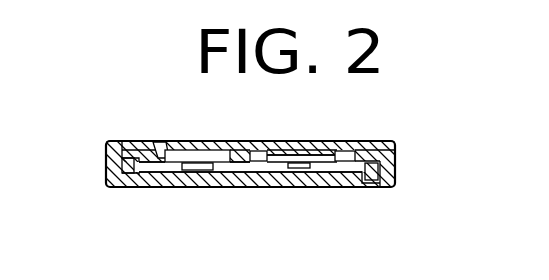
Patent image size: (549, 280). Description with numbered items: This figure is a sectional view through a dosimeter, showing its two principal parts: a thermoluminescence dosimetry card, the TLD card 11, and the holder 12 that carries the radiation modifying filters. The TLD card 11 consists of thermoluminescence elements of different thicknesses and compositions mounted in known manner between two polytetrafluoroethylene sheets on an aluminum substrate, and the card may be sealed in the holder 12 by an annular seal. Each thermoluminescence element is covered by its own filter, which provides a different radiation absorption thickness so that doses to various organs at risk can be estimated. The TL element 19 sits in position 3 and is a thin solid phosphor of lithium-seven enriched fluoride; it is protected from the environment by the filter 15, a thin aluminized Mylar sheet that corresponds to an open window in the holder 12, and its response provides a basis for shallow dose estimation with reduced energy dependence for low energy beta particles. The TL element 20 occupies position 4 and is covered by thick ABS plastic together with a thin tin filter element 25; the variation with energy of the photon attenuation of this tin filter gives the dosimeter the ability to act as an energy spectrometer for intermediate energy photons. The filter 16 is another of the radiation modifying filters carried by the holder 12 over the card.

The holder 12 is at (106, 172).
The radiation modifying filter 16 is at (337, 141).
The filter 15 is at (188, 141).
The position 3 is at (201, 132).
The tin filter element 25 is at (291, 112).
The position 4 is at (332, 128).
The TL element 19 is at (195, 166).
The TLD card 11 is at (254, 167).
The TL element 20 is at (303, 168).